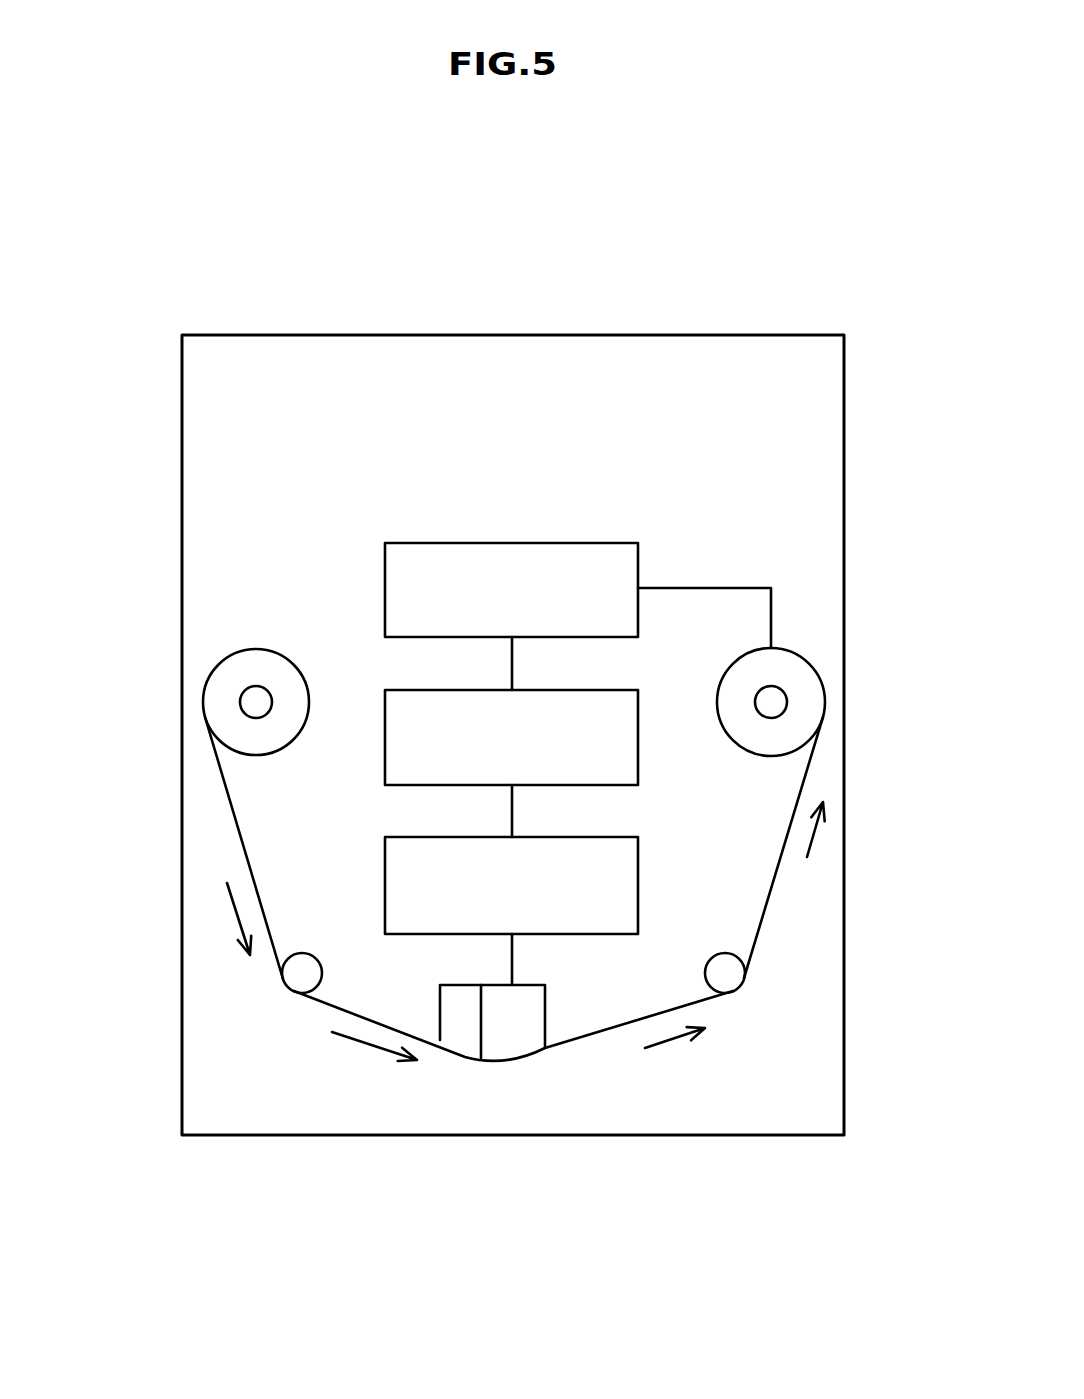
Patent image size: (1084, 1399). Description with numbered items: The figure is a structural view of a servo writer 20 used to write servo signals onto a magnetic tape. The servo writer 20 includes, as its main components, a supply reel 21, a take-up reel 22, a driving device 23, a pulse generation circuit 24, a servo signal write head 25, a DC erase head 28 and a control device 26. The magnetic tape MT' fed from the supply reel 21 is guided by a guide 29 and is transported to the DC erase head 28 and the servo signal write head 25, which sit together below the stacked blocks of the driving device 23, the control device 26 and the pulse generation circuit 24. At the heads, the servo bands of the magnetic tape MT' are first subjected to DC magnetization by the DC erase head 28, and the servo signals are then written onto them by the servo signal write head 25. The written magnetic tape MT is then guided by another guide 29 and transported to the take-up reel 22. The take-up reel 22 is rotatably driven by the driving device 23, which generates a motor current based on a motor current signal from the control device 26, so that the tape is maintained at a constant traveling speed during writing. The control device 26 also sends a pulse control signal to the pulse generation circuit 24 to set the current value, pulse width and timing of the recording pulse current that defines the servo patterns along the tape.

The servo writer 20 is at (612, 335).
The supply reel 21 is at (256, 649).
The take-up reel 22 is at (807, 658).
The driving device 23 is at (600, 543).
The pulse generation circuit 24 is at (609, 934).
The servo signal write head 25 is at (545, 1025).
The control device 26 is at (638, 759).
The DC erase head 28 is at (458, 1023).
The guide 29 is at (283, 976).
The magnetic tape MT is at (615, 889).
The magnetic tape MT' is at (175, 848).